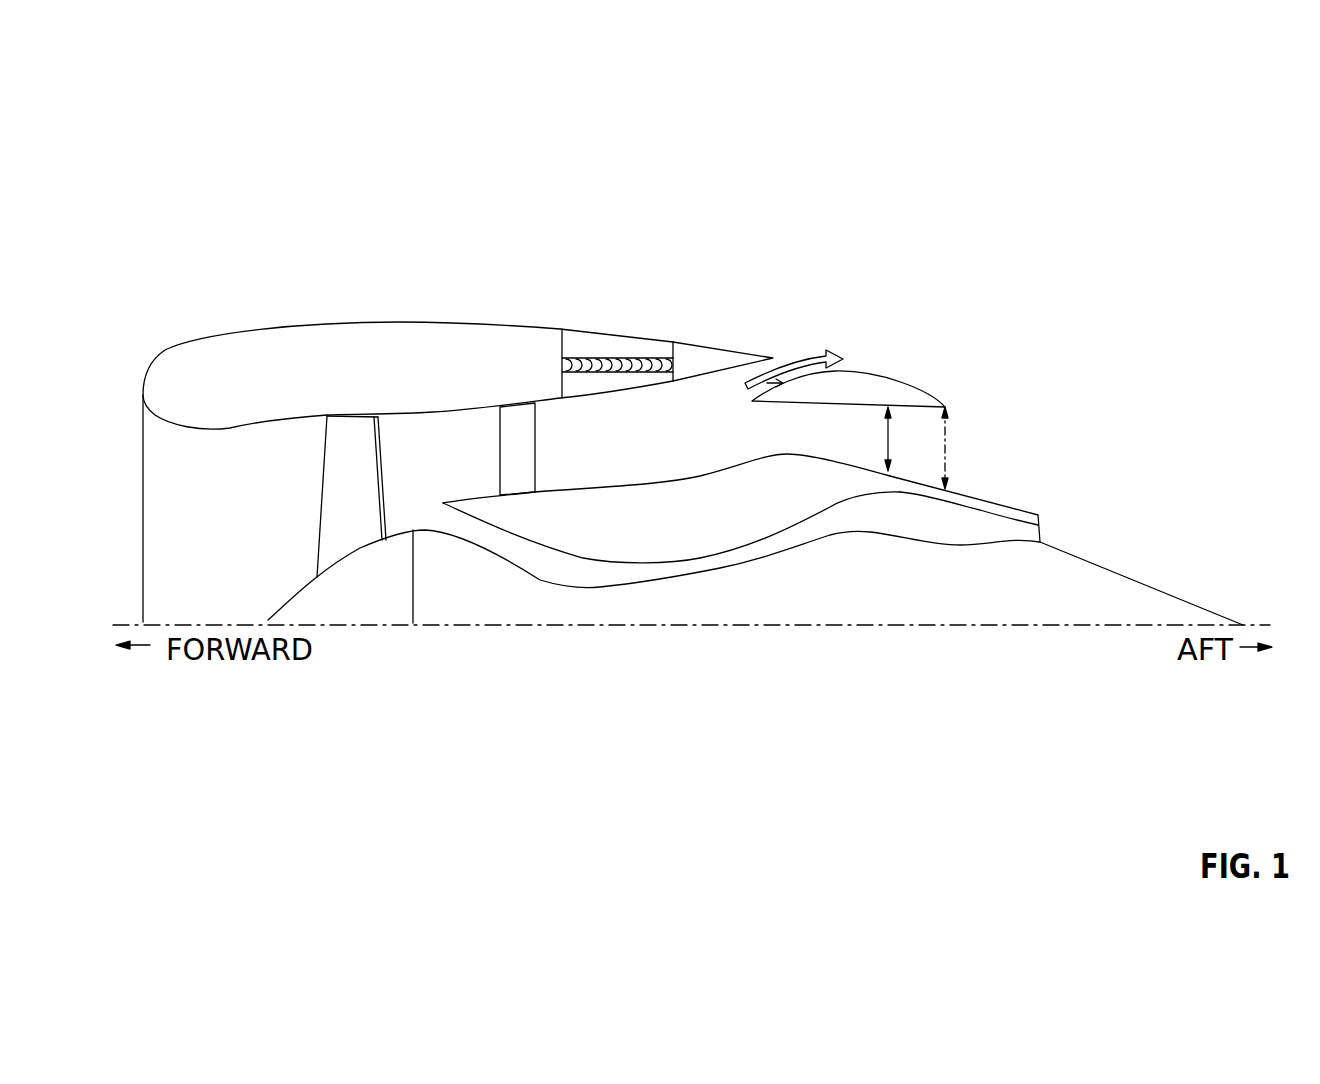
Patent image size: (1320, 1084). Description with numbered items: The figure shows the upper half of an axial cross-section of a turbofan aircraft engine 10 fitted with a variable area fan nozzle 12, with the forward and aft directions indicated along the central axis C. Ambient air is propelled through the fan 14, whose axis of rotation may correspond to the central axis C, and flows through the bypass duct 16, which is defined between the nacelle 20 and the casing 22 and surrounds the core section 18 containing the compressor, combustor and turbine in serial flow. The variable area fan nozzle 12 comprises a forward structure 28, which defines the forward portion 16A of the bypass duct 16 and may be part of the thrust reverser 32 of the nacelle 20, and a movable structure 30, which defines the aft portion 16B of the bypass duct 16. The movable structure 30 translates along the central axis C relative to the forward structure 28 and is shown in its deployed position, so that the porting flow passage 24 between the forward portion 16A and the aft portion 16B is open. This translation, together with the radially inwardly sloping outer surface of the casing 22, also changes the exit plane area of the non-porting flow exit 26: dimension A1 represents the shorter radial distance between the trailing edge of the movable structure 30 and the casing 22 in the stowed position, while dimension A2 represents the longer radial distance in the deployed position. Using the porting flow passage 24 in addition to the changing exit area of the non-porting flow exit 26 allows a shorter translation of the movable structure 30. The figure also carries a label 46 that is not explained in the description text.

The turbofan aircraft engine 10 is at (251, 157).
The variable area fan nozzle 12 is at (765, 303).
The fan 14 is at (340, 480).
The bypass duct 16 is at (477, 440).
The forward portion of bypass duct 16A is at (682, 444).
The aft portion of bypass duct 16B is at (870, 444).
The core section 18 is at (553, 568).
The nacelle 20 is at (322, 375).
The casing 22 is at (685, 482).
The porting flow passage 24 is at (777, 360).
The non-porting flow exit 26 is at (970, 473).
The forward structure 28 is at (685, 337).
The movable structure 30 is at (862, 341).
The thrust reverser 32 is at (587, 293).
The nozzle flap 46 is at (883, 377).
The dimension A1 is at (890, 433).
The dimension A2 is at (947, 452).
The central axis C is at (363, 626).